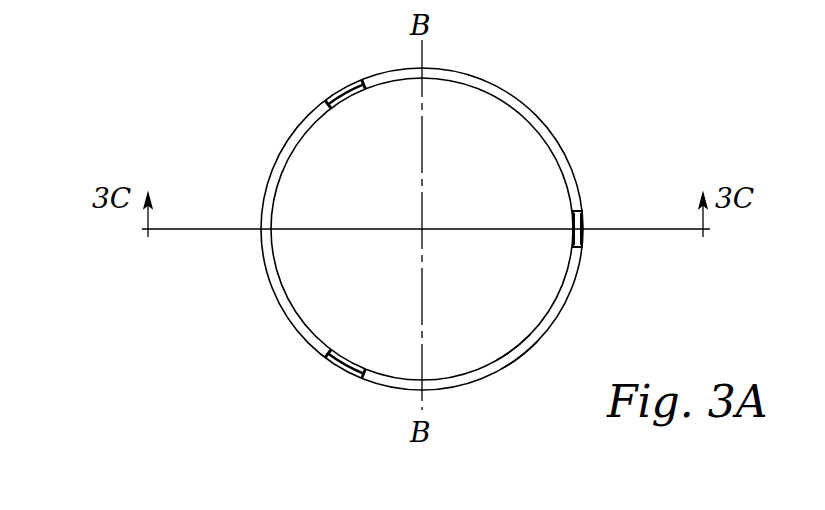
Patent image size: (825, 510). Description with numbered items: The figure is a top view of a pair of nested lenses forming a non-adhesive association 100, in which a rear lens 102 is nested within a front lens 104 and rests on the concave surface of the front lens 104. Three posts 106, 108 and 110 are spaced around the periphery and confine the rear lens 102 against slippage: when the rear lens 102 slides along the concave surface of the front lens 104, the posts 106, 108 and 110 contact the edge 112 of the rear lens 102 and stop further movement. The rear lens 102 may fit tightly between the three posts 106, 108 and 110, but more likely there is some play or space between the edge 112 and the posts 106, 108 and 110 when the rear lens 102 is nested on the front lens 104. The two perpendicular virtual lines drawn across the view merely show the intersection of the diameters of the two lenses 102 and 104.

The non-adhesive association 100 is at (467, 229).
The rear lens 102 is at (538, 298).
The front lens 104 is at (582, 270).
The post 106 is at (340, 368).
The post 108 is at (583, 215).
The post 110 is at (338, 95).
The edge of the rear lens 112 is at (513, 347).